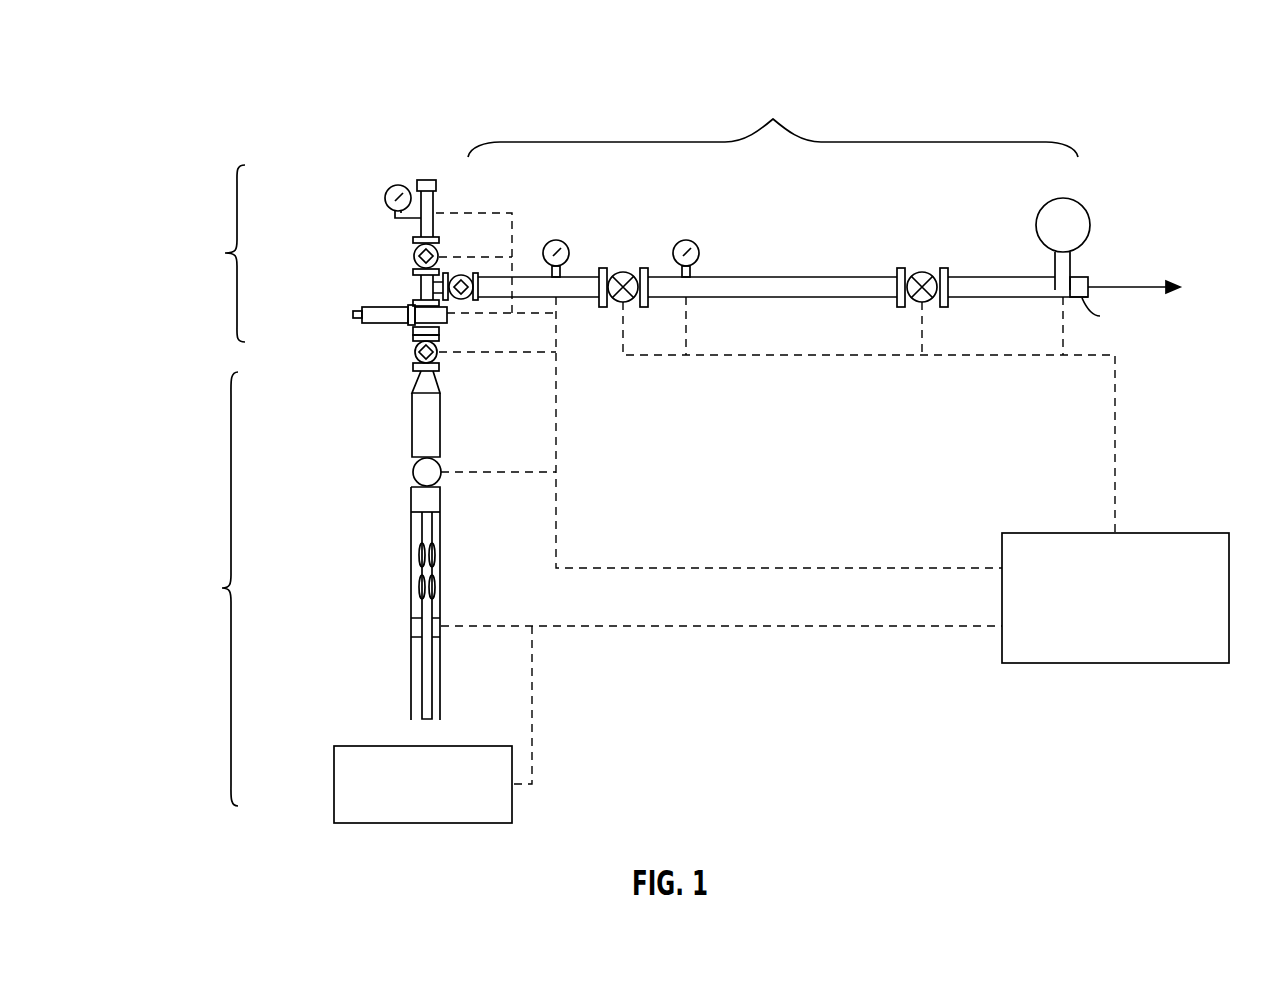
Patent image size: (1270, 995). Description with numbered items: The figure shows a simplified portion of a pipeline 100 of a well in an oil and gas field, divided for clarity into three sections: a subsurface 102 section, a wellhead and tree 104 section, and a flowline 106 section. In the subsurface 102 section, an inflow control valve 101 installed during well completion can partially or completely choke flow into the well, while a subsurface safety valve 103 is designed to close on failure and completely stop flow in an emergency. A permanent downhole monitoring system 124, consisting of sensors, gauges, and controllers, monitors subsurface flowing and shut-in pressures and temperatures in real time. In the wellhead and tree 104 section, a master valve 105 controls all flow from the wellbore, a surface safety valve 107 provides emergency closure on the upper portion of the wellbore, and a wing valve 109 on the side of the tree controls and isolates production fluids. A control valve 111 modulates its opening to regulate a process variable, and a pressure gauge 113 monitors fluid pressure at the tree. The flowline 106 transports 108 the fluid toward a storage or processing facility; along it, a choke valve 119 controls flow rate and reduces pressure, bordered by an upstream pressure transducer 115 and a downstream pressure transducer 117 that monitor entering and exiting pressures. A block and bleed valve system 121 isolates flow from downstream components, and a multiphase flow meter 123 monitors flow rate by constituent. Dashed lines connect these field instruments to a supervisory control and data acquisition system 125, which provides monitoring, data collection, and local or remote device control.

The pipeline 100 is at (191, 66).
The inflow control valve 101 is at (411, 627).
The subsurface section 102 is at (207, 589).
The subsurface safety valve 103 is at (414, 466).
The wellhead and tree section 104 is at (212, 253).
The master valve 105 is at (413, 358).
The flowline section 106 is at (773, 123).
The surface safety valve 107 is at (353, 311).
The transport of fluid 108 is at (1140, 283).
The wing valve 109 is at (450, 321).
The control valve 111 is at (414, 255).
The pressure gauge 113 is at (388, 190).
The upstream pressure transducer 115 is at (557, 240).
The downstream pressure transducer 117 is at (688, 240).
The choke valve 119 is at (627, 272).
The block and bleed valve system 121 is at (927, 272).
The multiphase flow meter 123 is at (1083, 207).
The permanent downhole monitoring system 124 is at (400, 746).
The supervisory control and data acquisition system 125 is at (1168, 533).